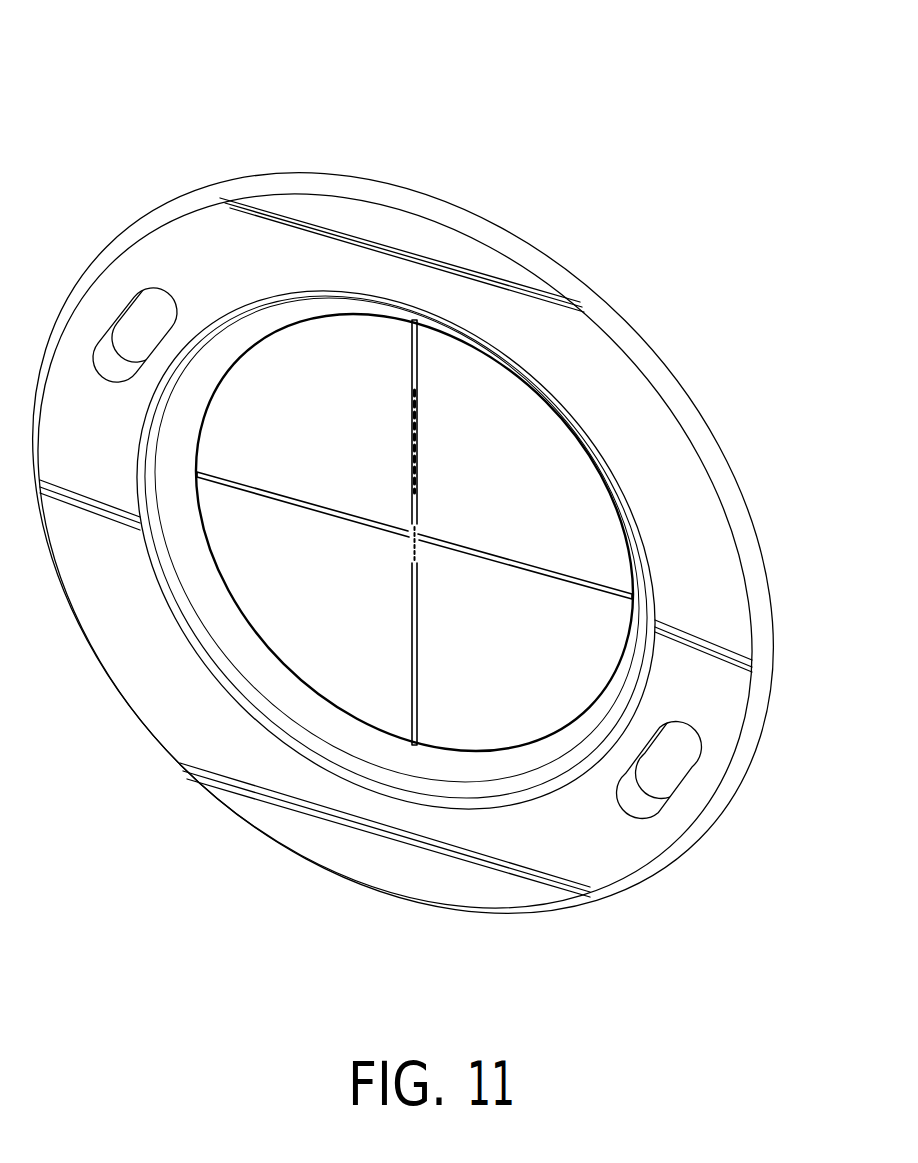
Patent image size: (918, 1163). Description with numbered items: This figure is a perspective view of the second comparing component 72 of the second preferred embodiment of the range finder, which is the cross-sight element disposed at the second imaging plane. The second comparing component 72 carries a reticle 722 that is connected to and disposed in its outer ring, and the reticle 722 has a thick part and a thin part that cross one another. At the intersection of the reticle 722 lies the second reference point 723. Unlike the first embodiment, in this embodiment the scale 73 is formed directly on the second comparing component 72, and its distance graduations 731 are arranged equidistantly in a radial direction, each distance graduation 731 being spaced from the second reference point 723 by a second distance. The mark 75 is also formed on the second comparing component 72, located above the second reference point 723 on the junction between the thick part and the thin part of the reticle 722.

The second comparing component 72 is at (330, 177).
The scale 73 is at (415, 464).
The distance graduations 731 is at (418, 415).
The mark 75 is at (464, 636).
The reticle 722 is at (295, 504).
The second reference point 723 is at (411, 534).